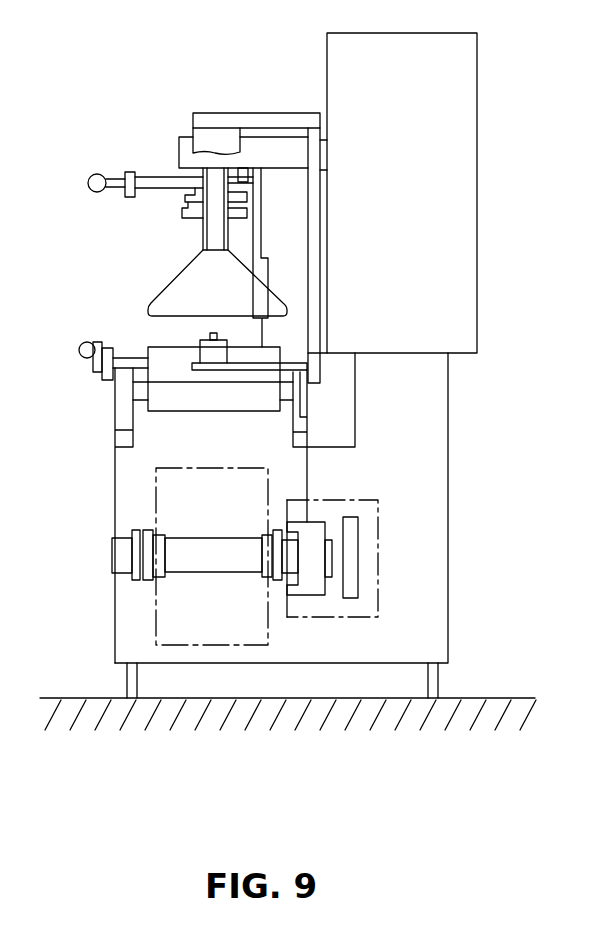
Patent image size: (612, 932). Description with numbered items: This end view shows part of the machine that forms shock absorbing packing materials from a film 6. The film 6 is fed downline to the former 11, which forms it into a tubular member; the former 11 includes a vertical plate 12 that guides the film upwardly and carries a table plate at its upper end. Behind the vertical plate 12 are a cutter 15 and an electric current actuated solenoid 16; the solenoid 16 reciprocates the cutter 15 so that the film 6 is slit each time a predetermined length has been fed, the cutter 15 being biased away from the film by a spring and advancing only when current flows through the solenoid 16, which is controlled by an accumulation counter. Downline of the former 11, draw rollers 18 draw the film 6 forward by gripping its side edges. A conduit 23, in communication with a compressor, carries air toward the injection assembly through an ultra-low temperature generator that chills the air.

The film 6 is at (268, 637).
The former 11 is at (168, 268).
The vertical plate 12 is at (156, 300).
The cutter 15 is at (211, 332).
The solenoid 16 is at (201, 343).
The draw rollers 18 is at (183, 211).
The conduit 23 is at (90, 177).